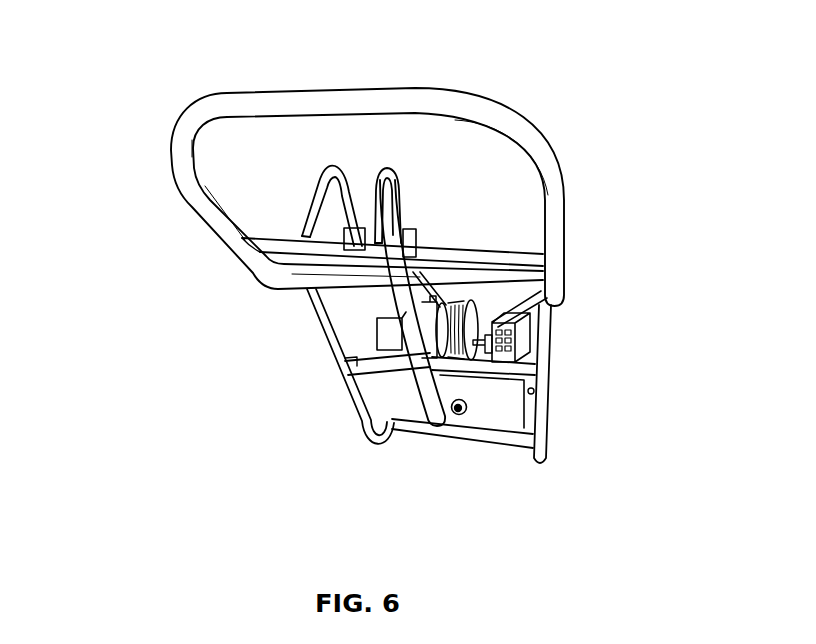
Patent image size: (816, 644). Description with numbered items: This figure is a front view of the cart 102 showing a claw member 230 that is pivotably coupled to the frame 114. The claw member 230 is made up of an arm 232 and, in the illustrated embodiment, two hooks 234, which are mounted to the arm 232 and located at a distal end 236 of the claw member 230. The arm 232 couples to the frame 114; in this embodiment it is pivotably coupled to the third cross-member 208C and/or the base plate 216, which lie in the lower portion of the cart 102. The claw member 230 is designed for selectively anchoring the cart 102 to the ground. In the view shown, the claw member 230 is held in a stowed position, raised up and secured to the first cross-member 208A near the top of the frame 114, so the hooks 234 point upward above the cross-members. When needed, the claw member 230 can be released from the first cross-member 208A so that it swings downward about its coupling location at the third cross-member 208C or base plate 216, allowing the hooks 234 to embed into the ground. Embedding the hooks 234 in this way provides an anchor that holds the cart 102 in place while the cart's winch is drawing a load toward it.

The cart 102 is at (356, 283).
The frame 114 is at (185, 200).
The hook 234 is at (309, 214).
The distal end 236 is at (398, 176).
The first cross-member 208A is at (502, 258).
The third cross-member 208C is at (465, 440).
The claw member 230 is at (408, 328).
The arm 232 is at (420, 375).
The base plate 216 is at (492, 407).